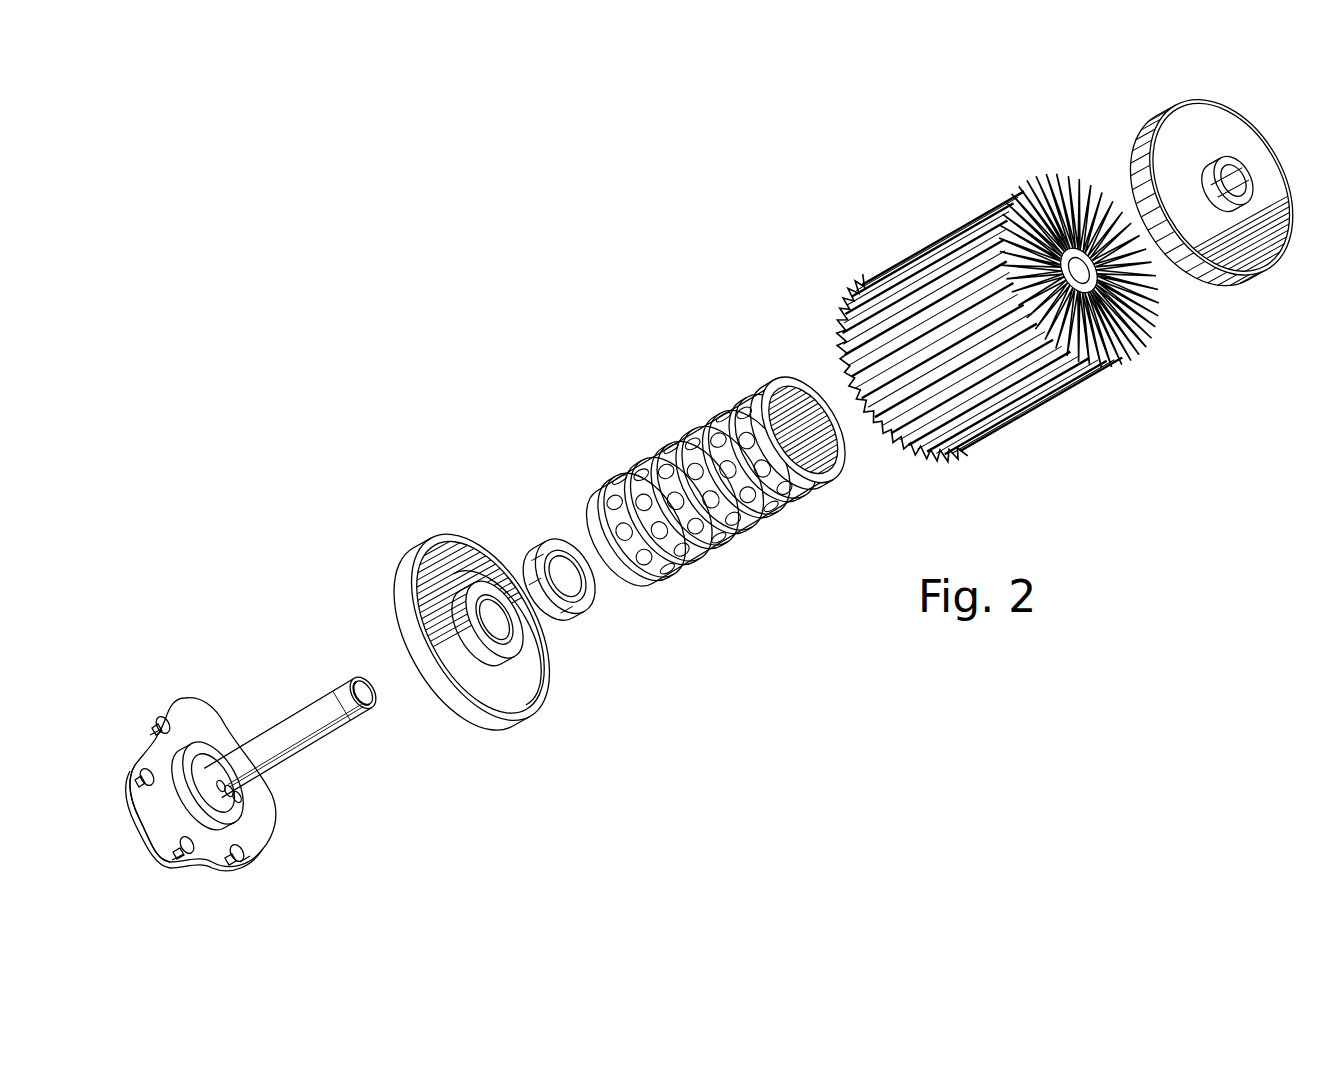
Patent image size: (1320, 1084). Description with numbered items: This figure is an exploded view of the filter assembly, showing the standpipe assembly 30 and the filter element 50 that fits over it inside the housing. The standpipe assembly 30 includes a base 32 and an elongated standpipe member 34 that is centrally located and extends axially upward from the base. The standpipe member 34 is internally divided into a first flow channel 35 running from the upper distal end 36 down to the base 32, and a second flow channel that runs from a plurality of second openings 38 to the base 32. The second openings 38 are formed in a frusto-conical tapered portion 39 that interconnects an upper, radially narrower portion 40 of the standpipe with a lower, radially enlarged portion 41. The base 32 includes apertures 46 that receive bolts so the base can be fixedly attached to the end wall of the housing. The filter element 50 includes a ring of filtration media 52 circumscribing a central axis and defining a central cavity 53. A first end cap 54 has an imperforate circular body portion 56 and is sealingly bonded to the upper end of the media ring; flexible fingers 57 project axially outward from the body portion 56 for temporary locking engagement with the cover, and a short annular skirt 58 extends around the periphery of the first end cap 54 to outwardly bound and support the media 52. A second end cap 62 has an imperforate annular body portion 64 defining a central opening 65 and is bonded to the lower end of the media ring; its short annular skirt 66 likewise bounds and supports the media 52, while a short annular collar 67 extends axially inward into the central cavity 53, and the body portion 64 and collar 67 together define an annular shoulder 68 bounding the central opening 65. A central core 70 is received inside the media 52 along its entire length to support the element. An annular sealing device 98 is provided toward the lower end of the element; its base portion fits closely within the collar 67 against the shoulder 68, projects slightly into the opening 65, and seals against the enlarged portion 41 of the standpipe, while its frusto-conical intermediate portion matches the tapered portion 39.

The standpipe assembly 30 is at (251, 758).
The base 32 is at (176, 784).
The standpipe member 34 is at (312, 696).
The first flow channel 35 is at (362, 693).
The upper distal end 36 is at (342, 705).
The second openings 38 is at (265, 800).
The frusto-conical tapered portion 39 is at (253, 758).
The upper radially narrower portion 40 is at (295, 745).
The lower radially enlarged portion 41 is at (145, 815).
The apertures 46 is at (156, 735).
The filter element 50 is at (839, 300).
The filtration media 52 is at (998, 300).
The central cavity 53 is at (1045, 212).
The first end cap 54 is at (1210, 231).
The circular body portion 56 is at (1220, 188).
The flexible fingers 57 is at (1227, 184).
The annular skirt 58 is at (1183, 208).
The second end cap 62 is at (494, 620).
The annular body portion 64 is at (480, 627).
The central opening 65 is at (507, 629).
The annular skirt 66 is at (483, 634).
The annular collar 67 is at (480, 627).
The annular shoulder 68 is at (487, 624).
The central core 70 is at (686, 445).
The annular sealing device 98 is at (588, 606).